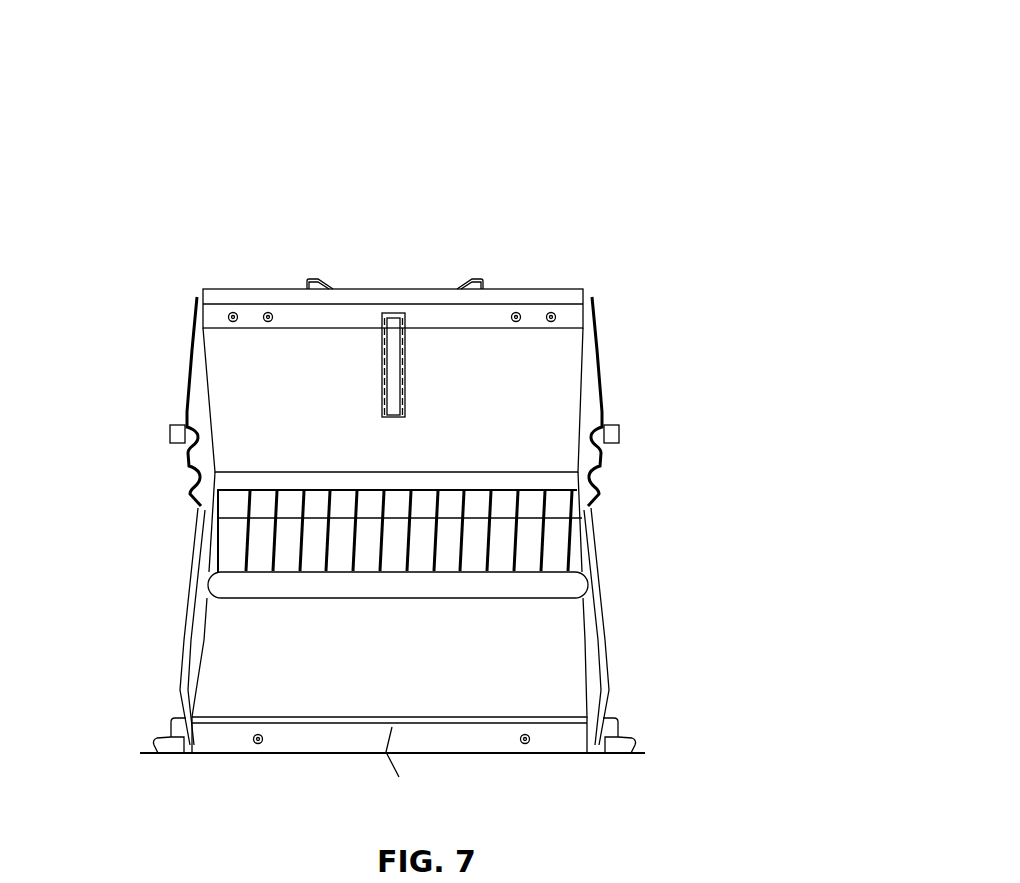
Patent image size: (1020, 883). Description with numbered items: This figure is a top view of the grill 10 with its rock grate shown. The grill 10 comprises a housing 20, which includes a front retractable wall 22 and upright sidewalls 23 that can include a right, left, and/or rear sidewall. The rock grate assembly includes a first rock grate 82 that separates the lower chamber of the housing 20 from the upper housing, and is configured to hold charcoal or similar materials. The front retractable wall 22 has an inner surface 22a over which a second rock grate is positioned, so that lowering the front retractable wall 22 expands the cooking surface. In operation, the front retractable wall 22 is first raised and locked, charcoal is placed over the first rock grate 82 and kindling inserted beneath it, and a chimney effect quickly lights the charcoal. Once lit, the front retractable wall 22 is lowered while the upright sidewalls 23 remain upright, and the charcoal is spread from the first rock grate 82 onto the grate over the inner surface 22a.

The grill 10 is at (580, 118).
The housing 20 is at (195, 307).
The upright sidewalls 23 is at (197, 405).
The first rock grate 82 is at (517, 507).
The front retractable wall 22 is at (590, 672).
The front retractable wall inner surface 22a is at (258, 645).